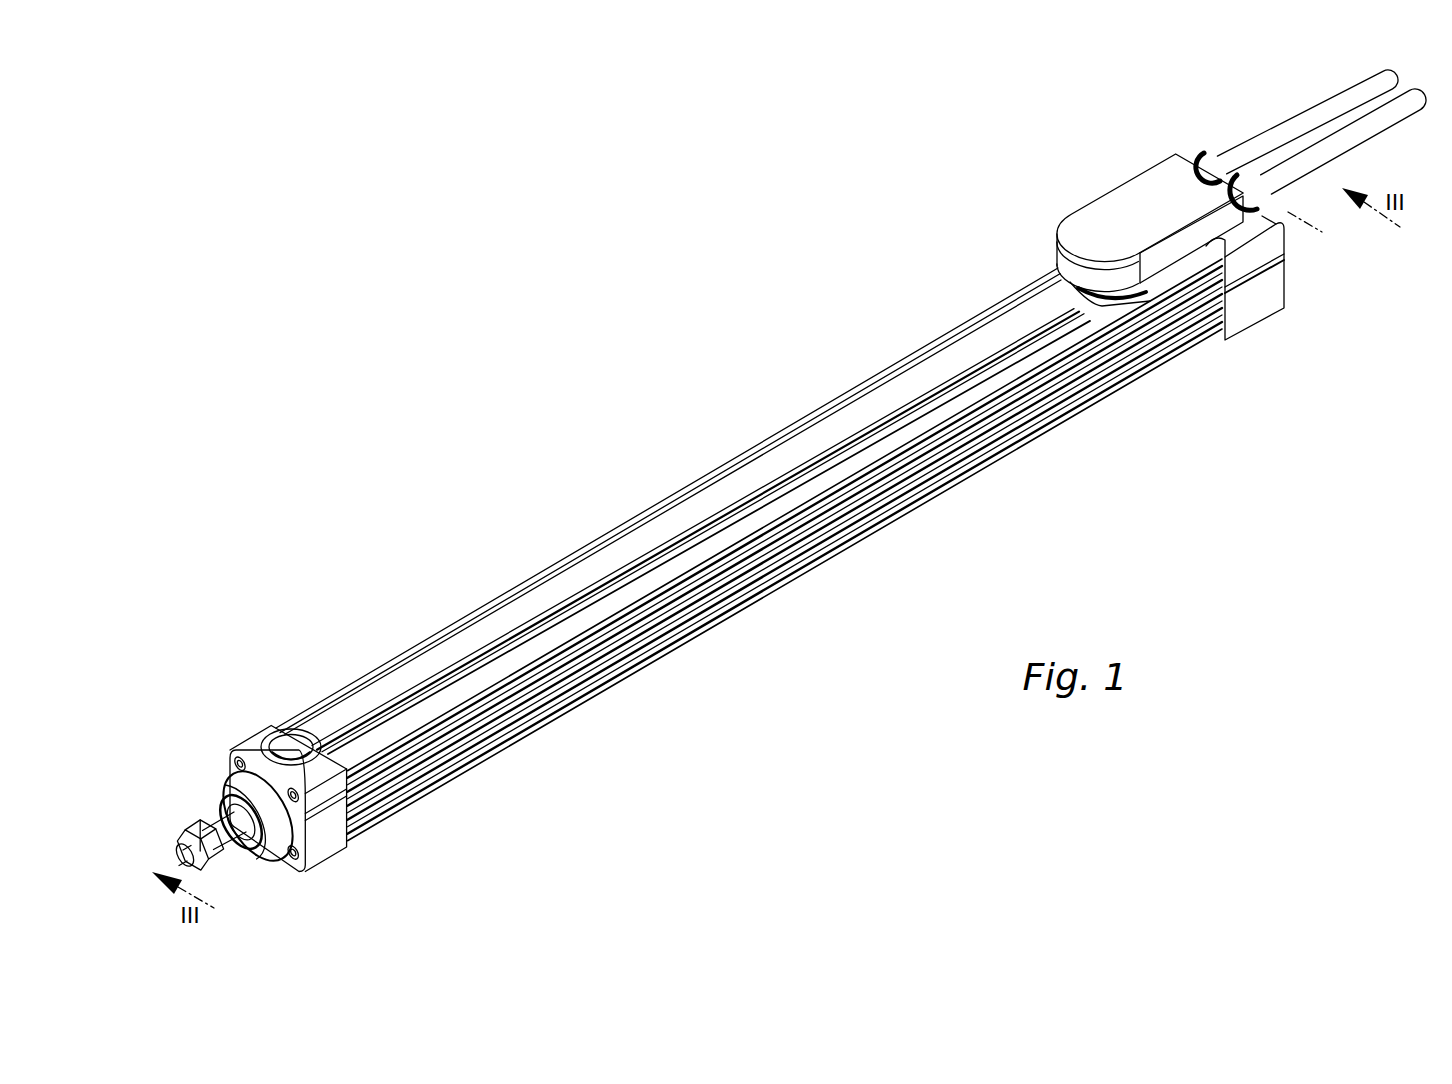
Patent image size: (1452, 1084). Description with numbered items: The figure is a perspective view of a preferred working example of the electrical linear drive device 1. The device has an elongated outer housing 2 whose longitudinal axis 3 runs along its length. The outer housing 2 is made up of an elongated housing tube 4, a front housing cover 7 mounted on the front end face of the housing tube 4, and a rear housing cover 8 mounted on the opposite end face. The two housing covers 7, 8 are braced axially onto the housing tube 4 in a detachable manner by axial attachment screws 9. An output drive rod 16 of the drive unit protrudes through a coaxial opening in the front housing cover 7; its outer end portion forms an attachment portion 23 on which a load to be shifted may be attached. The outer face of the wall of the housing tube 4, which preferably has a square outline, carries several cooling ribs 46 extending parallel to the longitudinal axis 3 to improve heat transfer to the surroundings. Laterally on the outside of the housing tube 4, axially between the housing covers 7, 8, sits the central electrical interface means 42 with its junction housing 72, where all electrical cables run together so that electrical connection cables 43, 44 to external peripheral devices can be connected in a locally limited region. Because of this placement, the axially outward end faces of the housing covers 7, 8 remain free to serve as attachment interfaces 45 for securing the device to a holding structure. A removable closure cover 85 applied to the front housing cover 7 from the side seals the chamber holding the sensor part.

The electrical linear drive device 1 is at (916, 326).
The outer housing 2 is at (1082, 420).
The longitudinal axis 3 is at (1302, 218).
The housing tube 4 is at (902, 530).
The front housing cover 7 is at (327, 840).
The rear housing cover 8 is at (1253, 310).
The axial attachment screws 9 is at (280, 773).
The output drive rod 16 is at (222, 803).
The attachment portion 23 is at (183, 843).
The central electrical interface means 42 is at (1098, 210).
The electrical connection cable 43 is at (1378, 124).
The electrical connection cable 44 is at (1343, 91).
The attachment interfaces 45 is at (279, 866).
The cooling ribs 46 is at (606, 652).
The junction housing 72 is at (1163, 180).
The closure cover 85 is at (299, 738).